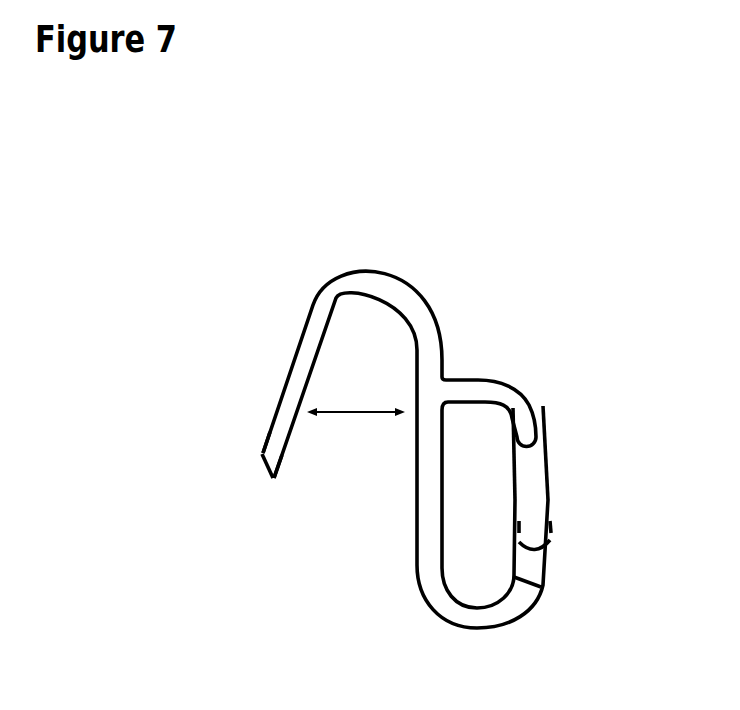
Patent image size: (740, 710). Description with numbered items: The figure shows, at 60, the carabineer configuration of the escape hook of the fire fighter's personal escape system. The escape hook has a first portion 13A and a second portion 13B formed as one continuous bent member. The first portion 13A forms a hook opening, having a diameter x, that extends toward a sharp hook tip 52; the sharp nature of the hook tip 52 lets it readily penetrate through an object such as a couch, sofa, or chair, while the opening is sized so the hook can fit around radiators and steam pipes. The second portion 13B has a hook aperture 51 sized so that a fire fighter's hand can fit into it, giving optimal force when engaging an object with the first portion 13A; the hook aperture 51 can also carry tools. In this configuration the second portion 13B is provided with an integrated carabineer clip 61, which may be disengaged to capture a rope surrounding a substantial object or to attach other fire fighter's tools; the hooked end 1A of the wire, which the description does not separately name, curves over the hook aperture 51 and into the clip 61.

The carabineer configuration of the escape hook 60 is at (390, 189).
The first portion 13A is at (286, 380).
The second portion 13B is at (517, 613).
The hook tip 52 is at (262, 472).
The hook aperture 51 is at (475, 522).
The integrated carabineer clip 61 is at (549, 497).
The hook portion 1A is at (532, 391).